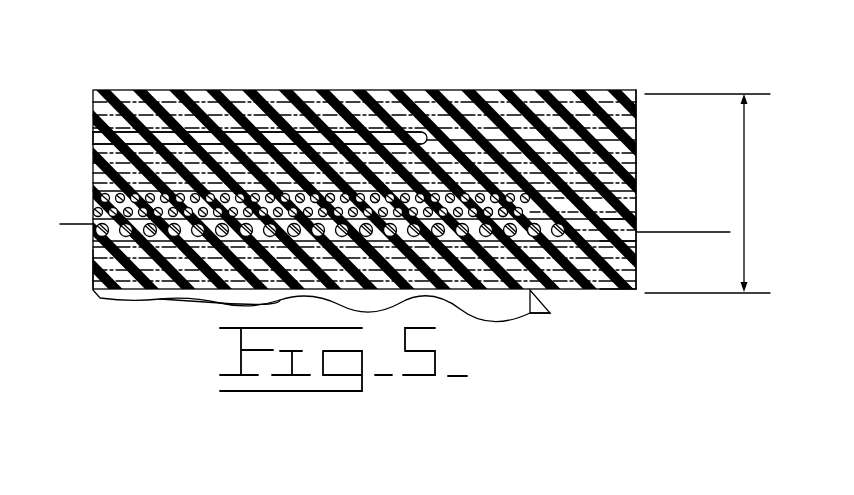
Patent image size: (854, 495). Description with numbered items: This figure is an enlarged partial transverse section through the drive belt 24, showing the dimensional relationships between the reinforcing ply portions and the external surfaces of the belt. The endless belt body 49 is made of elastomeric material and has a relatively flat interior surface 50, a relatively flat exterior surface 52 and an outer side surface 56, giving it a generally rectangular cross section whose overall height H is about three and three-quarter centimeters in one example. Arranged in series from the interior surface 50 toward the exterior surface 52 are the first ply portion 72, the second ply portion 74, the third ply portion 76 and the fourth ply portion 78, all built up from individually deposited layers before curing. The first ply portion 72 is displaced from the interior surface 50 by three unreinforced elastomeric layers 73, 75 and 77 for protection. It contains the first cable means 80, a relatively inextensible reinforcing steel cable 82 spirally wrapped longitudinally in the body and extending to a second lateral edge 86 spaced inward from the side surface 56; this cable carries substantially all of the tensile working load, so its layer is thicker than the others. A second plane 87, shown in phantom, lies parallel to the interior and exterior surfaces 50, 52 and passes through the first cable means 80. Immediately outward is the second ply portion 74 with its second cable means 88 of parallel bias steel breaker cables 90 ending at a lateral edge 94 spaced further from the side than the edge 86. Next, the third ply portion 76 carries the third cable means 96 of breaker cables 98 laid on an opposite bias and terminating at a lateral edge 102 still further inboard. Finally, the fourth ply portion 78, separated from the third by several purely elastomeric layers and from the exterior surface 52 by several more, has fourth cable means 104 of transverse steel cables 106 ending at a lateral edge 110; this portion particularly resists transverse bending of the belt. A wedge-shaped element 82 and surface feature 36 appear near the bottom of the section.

The drive belt 24 is at (538, 85).
The exterior surface 52 is at (188, 90).
The fourth cable means 104 is at (312, 124).
The steel cables 106 is at (402, 126).
The lateral edge 110 is at (438, 130).
The fourth ply portion 78 is at (94, 140).
The belt body 49 is at (112, 168).
The third ply portion 76 is at (88, 196).
The second ply portion 74 is at (86, 213).
The first ply portion 72 is at (86, 232).
The unreinforced layer 77 is at (93, 250).
The unreinforced layer 75 is at (93, 266).
The outer side surface 56 is at (637, 128).
The unreinforced layer 73 is at (92, 290).
The first cable means 80 is at (597, 262).
The interior surface 50 is at (122, 298).
The substrate surface 36 is at (202, 306).
The reinforcing steel cable 82 is at (570, 262).
The breaker cables 98 is at (333, 192).
The third cable means 96 is at (378, 190).
The lateral edge 102 is at (486, 188).
The second cable means 88 is at (503, 192).
The breaker cables 90 is at (542, 190).
The lateral edge 94 is at (637, 219).
The second lateral edge 86 is at (637, 239).
The second plane 87 is at (692, 232).
The overall height H is at (707, 193).